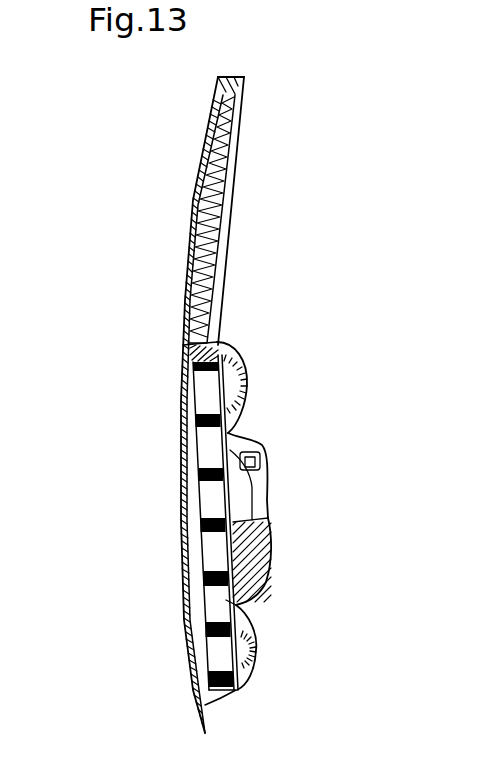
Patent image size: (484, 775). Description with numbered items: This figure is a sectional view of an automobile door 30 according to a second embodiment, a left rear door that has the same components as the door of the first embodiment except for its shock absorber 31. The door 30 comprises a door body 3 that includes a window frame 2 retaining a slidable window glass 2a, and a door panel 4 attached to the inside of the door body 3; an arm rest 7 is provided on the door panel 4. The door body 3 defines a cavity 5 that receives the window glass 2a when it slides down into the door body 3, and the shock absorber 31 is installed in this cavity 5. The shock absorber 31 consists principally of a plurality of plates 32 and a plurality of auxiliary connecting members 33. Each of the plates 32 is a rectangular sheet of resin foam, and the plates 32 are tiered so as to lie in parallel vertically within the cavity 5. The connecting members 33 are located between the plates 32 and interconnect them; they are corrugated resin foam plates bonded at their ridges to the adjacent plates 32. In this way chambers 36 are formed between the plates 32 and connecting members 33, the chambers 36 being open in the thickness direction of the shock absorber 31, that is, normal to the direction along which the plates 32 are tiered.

The window frame 2 is at (215, 203).
The window glass 2a is at (195, 247).
The door body 3 is at (172, 568).
The door panel 4 is at (232, 428).
The cavity 5 is at (180, 457).
The arm rest 7 is at (263, 562).
The automobile door 30 is at (230, 301).
The shock absorber 31 is at (193, 491).
The plates 32 is at (180, 422).
The auxiliary connecting members 33 is at (217, 418).
The chambers 36 is at (205, 390).